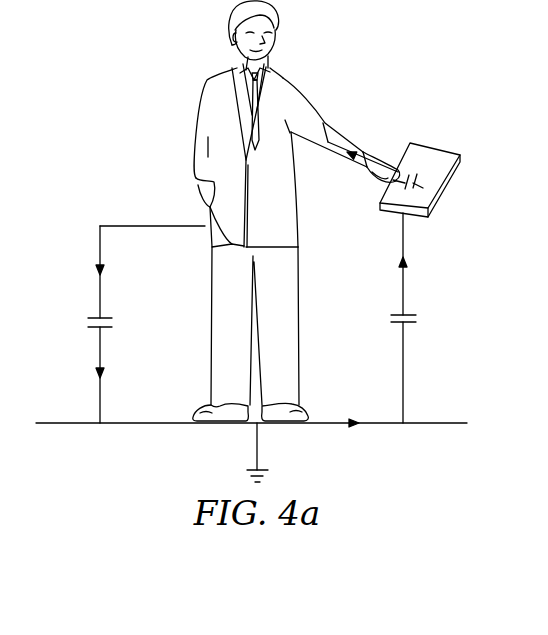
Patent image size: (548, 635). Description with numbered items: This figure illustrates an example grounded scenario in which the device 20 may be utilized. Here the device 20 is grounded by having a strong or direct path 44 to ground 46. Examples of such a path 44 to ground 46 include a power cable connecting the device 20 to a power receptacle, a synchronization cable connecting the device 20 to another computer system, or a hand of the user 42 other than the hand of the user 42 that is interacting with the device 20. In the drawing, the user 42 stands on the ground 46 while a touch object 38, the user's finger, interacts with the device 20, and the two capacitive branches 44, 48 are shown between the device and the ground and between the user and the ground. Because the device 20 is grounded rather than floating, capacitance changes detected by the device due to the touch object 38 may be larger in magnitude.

The device 20 is at (432, 143).
The touch object 38 is at (400, 162).
The user 42 is at (207, 80).
The path to ground 44 is at (403, 297).
The ground 46 is at (258, 445).
The user to ground capacitance 48 is at (100, 297).